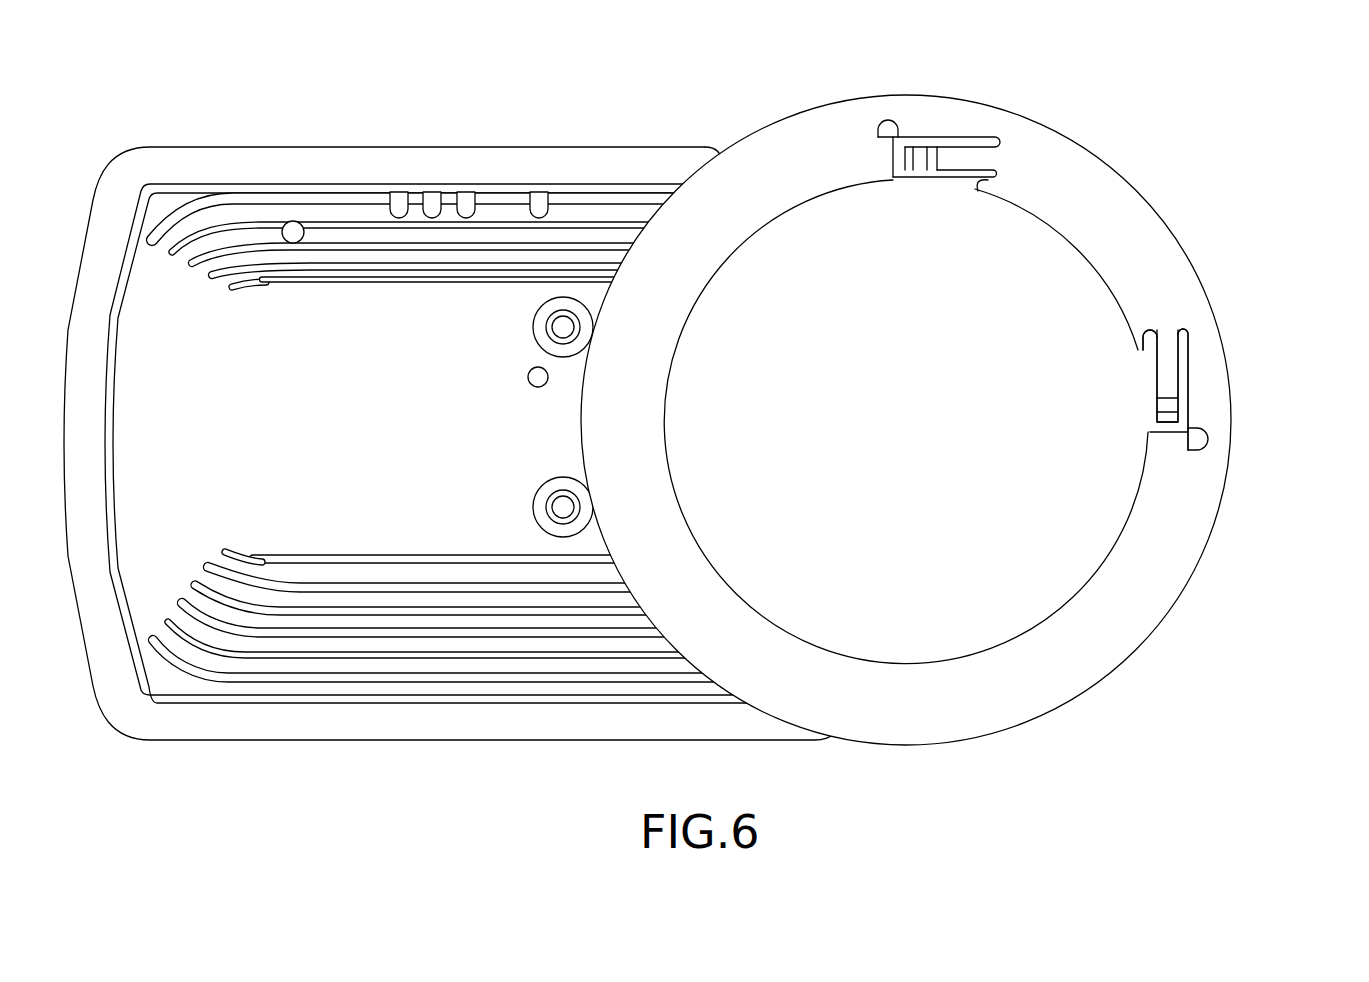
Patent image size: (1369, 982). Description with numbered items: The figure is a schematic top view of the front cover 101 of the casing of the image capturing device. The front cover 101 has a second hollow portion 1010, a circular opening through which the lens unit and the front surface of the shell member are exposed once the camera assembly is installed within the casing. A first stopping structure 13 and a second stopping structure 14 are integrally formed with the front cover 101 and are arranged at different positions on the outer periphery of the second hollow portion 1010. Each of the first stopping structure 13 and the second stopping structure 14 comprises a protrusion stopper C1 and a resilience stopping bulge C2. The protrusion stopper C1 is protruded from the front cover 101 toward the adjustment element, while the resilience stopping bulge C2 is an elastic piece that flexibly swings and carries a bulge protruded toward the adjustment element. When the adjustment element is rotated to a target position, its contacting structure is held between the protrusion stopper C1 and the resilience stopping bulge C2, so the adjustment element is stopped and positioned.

The front cover 101 is at (1250, 97).
The second hollow portion 1010 is at (1035, 283).
The first stopping structure 13 is at (1088, 233).
The second stopping structure 14 is at (1300, 290).
The protrusion stopper C1 is at (892, 122).
The resilience stopping bulge C2 is at (965, 157).